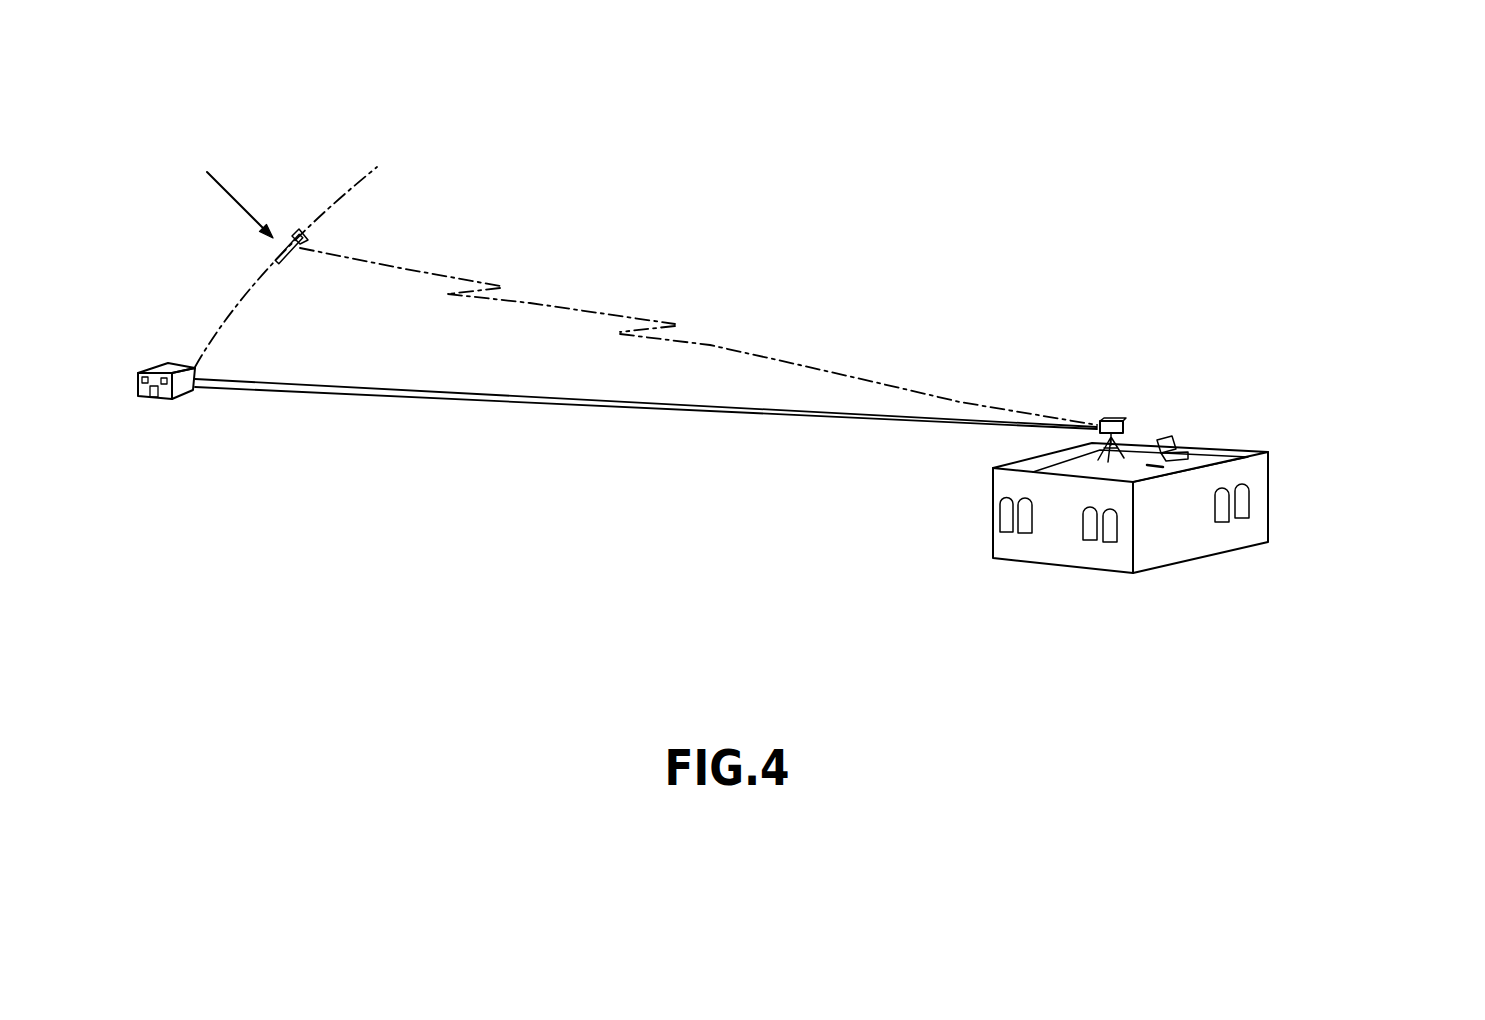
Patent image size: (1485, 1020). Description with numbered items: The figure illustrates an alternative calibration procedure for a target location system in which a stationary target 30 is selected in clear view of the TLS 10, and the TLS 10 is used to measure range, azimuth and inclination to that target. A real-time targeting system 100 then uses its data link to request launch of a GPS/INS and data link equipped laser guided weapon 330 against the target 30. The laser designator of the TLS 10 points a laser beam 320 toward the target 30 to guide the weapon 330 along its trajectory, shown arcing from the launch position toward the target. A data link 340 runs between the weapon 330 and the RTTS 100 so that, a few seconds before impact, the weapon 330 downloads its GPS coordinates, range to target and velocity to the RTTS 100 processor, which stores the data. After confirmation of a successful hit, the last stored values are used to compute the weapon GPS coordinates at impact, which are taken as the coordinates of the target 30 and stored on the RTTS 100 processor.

The target location system 10 is at (1150, 468).
The stationary target 30 is at (160, 399).
The real-time targeting system 100 is at (1172, 440).
The laser beam 320 is at (512, 403).
The laser guided weapon 330 is at (282, 252).
The data-link between weapon and RTTS 340 is at (418, 274).